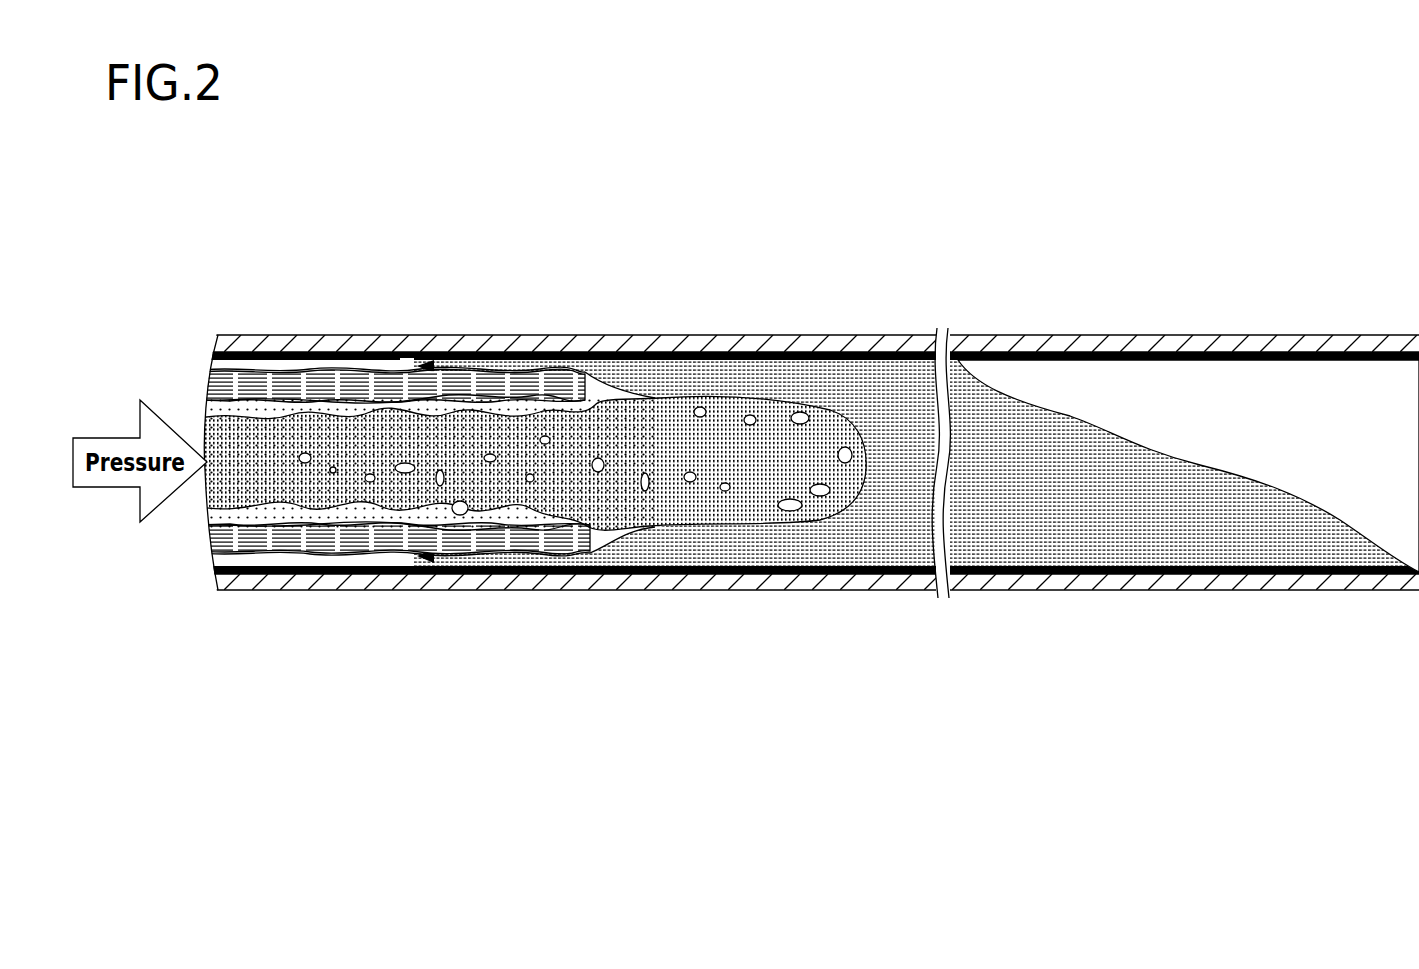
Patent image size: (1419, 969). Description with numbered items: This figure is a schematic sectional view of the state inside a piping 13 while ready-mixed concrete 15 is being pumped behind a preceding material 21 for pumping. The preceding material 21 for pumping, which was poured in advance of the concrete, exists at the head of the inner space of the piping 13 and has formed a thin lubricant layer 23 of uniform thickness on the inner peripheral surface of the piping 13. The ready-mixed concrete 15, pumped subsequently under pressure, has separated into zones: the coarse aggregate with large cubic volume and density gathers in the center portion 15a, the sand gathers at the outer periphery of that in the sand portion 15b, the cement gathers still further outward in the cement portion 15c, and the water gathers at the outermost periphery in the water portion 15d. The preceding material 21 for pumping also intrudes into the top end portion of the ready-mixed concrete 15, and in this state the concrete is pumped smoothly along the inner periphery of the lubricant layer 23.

The piping 13 is at (878, 343).
The ready-mixed concrete 15 is at (502, 569).
The center portion 15a is at (420, 475).
The sand portion 15b is at (488, 505).
The cement portion 15c is at (238, 540).
The water portion 15d is at (330, 555).
The preceding material for pumping 21 is at (878, 540).
The lubricant layer 23 is at (562, 570).